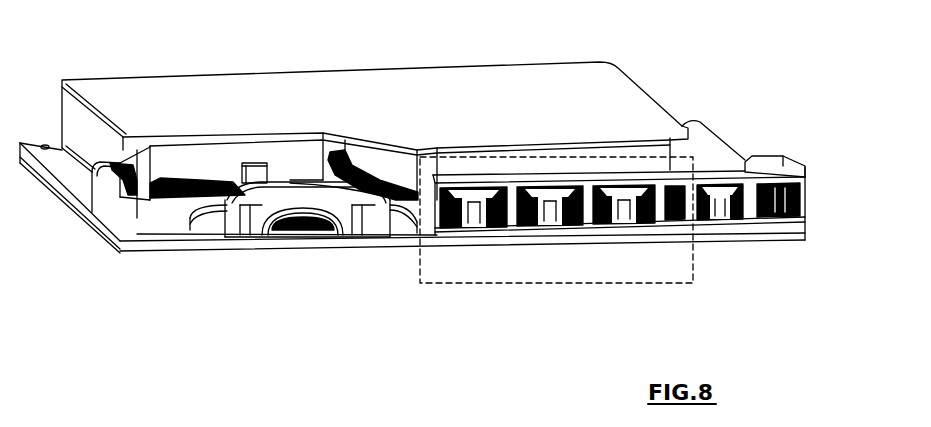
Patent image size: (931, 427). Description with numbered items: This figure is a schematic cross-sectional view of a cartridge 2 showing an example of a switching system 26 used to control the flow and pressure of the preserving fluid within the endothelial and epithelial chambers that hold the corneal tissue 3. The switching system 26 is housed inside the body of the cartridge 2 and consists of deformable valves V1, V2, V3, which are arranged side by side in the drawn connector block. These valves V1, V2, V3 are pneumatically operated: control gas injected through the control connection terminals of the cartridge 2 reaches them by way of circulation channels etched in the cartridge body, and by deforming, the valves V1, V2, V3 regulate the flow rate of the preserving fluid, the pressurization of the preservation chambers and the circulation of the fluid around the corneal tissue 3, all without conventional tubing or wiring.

The cartridge 2 is at (332, 70).
The corneal tissue 3 is at (350, 222).
The switching system 26 is at (708, 158).
The valve V1 is at (465, 233).
The valve V2 is at (531, 232).
The valve V3 is at (599, 232).